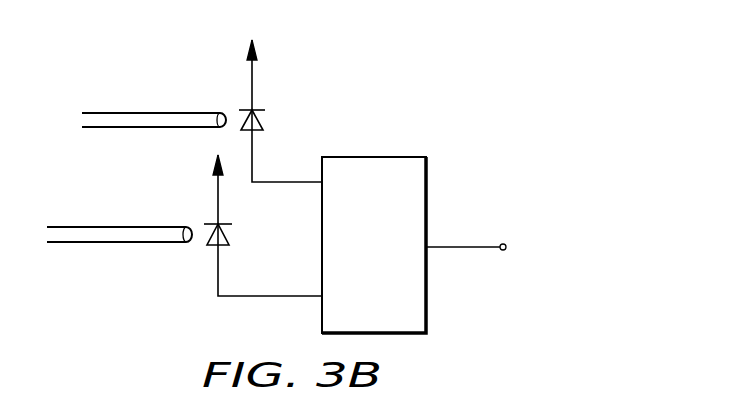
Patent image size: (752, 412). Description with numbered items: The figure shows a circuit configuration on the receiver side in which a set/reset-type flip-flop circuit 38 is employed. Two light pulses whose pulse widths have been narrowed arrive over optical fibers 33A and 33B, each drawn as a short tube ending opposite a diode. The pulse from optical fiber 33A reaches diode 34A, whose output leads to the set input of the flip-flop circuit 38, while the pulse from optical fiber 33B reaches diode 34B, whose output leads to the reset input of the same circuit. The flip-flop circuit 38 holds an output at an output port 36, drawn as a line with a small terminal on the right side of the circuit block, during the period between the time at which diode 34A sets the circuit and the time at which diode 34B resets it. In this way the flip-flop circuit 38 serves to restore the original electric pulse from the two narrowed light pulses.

The optical fiber 33A is at (138, 122).
The optical fiber 33B is at (103, 236).
The diode 34A is at (258, 123).
The diode 34B is at (227, 241).
The set/reset-type flip-flop circuit 38 is at (393, 158).
The output port 36 is at (505, 240).